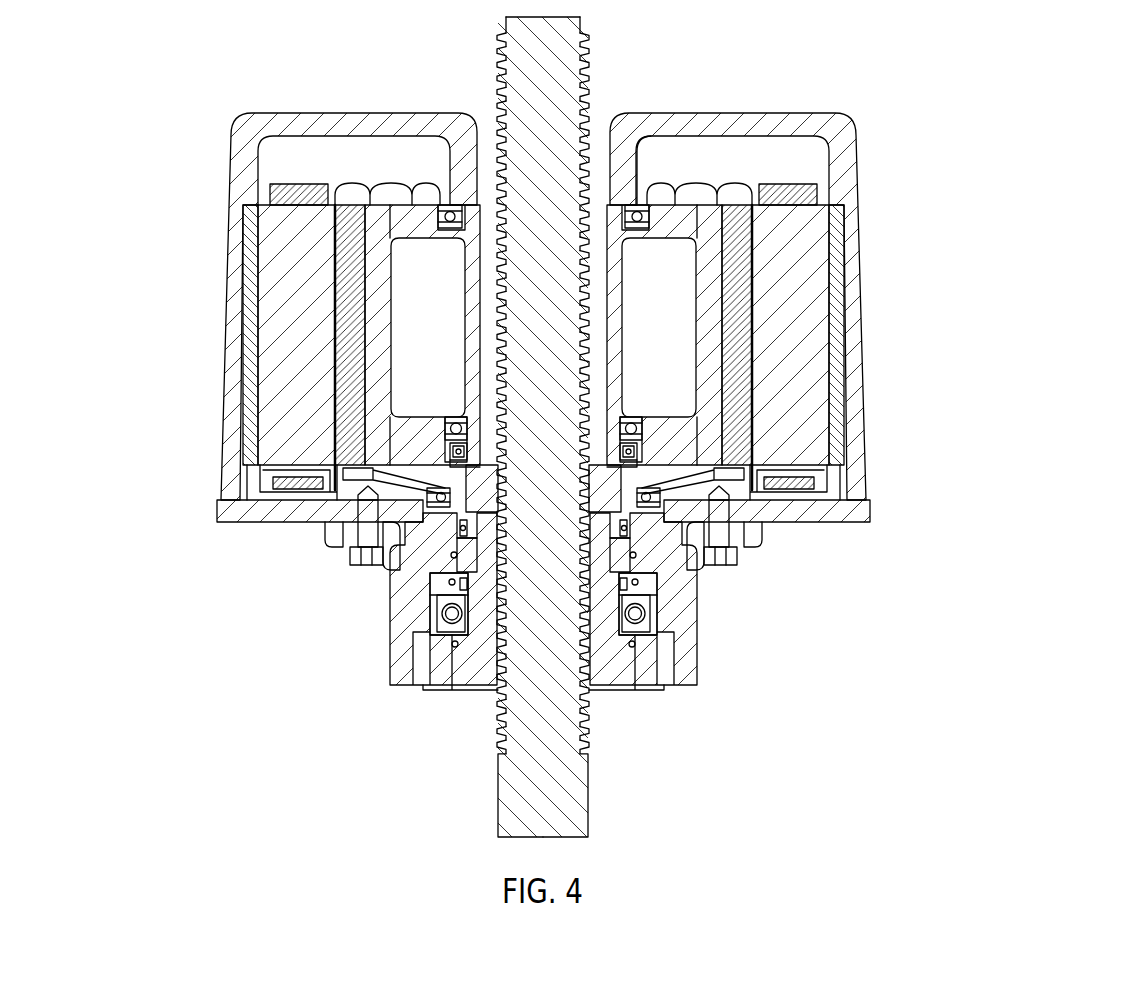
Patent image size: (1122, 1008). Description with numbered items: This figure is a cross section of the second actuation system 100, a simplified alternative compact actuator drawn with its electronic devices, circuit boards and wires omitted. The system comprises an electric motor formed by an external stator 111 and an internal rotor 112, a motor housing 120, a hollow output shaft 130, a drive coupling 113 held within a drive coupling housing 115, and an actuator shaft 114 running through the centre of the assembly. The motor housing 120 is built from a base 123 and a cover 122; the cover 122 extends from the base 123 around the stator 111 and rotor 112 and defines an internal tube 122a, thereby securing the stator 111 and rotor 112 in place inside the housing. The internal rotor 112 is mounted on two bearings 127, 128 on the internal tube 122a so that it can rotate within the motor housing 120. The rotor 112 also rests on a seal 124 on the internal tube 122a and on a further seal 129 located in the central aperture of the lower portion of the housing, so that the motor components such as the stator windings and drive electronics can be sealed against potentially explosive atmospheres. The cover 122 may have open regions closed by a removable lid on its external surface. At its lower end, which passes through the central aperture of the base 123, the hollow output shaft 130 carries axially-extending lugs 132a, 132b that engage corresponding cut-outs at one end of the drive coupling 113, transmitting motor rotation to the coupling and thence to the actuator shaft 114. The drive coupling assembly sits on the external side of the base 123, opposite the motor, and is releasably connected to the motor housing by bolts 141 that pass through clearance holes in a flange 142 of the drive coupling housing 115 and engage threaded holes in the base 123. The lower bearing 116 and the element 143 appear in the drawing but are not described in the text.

The second actuation system 100 is at (140, 121).
The external stator 111 is at (277, 367).
The internal rotor 112 is at (387, 220).
The drive coupling 113 is at (472, 662).
The actuator shaft 114 is at (547, 743).
The drive coupling housing 115 is at (672, 607).
The lower bearing 116 is at (644, 613).
The motor housing 120 is at (1015, 319).
The cover 122 is at (838, 130).
The internal tube 122a is at (626, 183).
The base 123 is at (857, 507).
The seal 124 is at (448, 443).
The bearing 127 is at (450, 212).
The bearing 128 is at (447, 430).
The seal 129 is at (441, 497).
The hollow output shaft 130 is at (622, 477).
The axially-extending lug 132a is at (462, 540).
The axially-extending lug 132b is at (640, 520).
The bolt 141 is at (358, 533).
The flange 142 is at (388, 548).
The seal bearing 143 is at (627, 500).